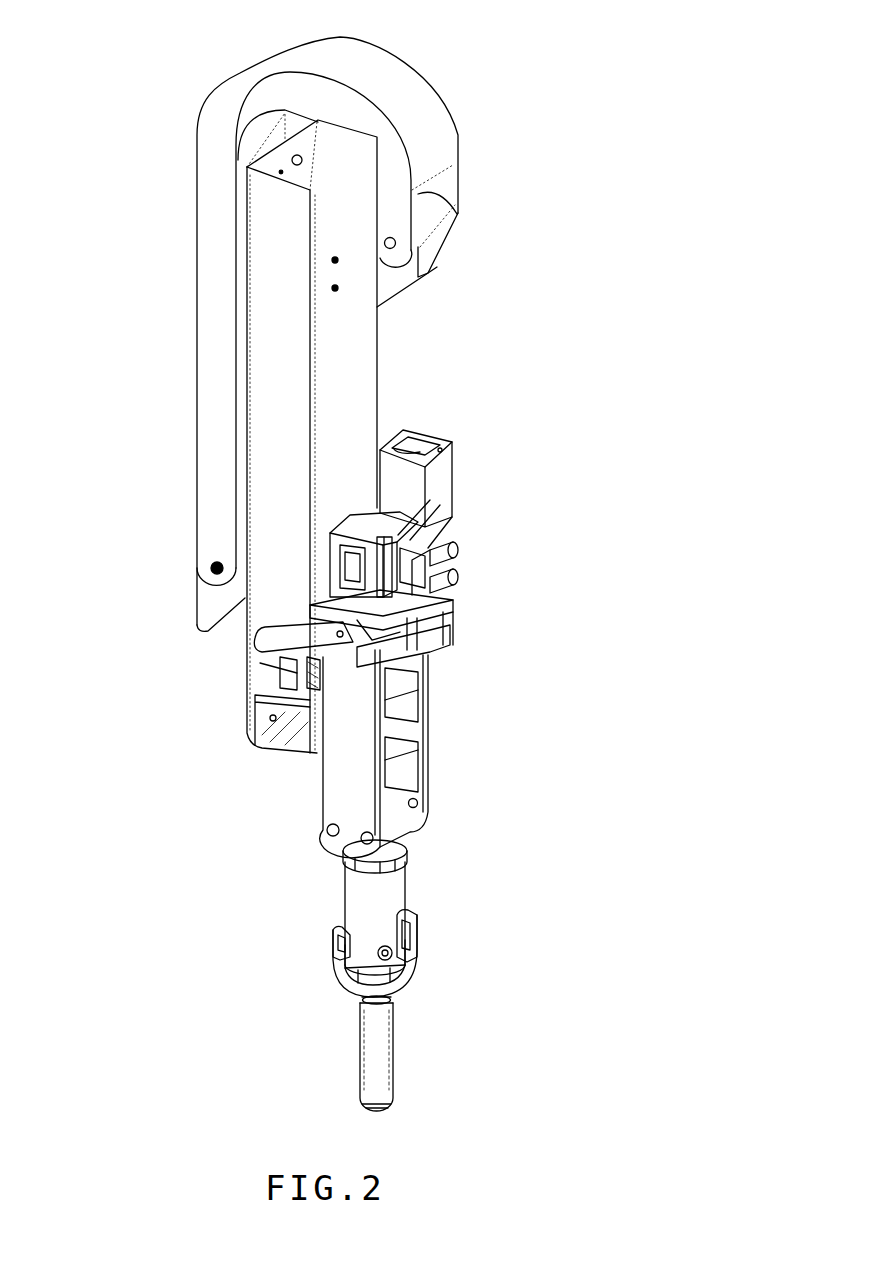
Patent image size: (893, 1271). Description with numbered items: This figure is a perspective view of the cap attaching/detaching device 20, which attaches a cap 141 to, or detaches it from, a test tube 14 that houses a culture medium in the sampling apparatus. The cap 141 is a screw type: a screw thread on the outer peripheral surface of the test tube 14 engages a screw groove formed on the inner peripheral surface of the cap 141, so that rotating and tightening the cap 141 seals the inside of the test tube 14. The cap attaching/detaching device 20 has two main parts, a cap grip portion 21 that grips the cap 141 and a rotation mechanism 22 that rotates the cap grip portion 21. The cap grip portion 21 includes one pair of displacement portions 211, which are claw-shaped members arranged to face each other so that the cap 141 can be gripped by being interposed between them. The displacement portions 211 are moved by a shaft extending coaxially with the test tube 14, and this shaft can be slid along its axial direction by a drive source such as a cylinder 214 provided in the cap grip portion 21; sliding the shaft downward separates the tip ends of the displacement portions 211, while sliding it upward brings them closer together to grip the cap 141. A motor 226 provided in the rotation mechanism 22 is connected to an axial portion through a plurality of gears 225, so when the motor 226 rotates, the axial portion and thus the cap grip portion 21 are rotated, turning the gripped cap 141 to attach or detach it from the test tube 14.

The cap attaching/detaching device 20 is at (133, 247).
The cylinder 214 is at (353, 503).
The motor 226 is at (457, 472).
The gears 225 is at (440, 643).
The rotation mechanism 22 is at (343, 888).
The cap grip portion 21 is at (421, 955).
The displacement portions 211 is at (343, 973).
The cap 141 is at (367, 1007).
The test tube 14 is at (360, 1087).